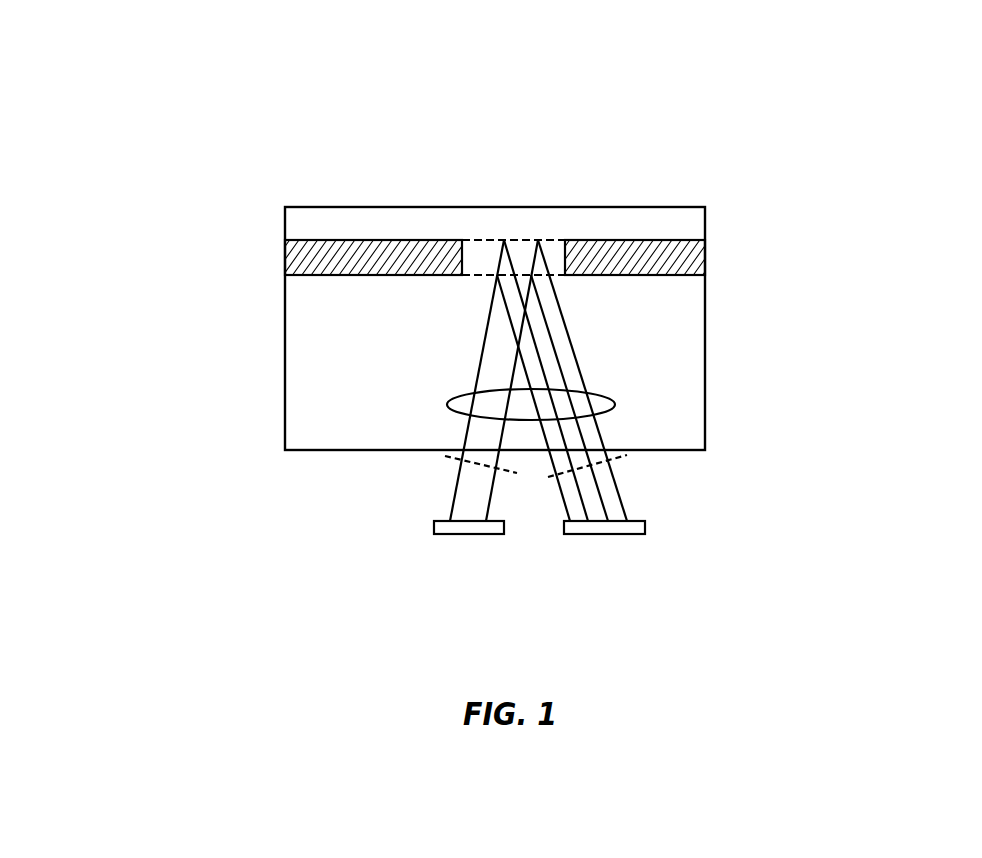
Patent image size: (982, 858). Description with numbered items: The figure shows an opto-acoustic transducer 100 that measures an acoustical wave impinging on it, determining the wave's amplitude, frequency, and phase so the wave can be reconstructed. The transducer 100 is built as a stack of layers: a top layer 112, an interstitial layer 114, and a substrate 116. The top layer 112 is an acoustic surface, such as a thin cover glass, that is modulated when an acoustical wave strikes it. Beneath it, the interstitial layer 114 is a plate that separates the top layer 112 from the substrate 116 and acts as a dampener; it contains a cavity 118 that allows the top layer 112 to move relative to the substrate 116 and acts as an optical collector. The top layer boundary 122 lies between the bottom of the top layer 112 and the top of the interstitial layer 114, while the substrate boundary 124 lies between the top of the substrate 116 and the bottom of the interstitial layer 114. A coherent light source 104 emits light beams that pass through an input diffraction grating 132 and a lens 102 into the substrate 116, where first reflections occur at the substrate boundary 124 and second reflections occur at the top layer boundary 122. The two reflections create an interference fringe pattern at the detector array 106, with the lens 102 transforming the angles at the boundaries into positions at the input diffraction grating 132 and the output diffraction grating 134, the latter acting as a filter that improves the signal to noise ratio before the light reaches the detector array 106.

The opto-acoustic transducer 100 is at (249, 65).
The lens 102 is at (447, 404).
The coherent light source 104 is at (470, 535).
The detector array 106 is at (603, 535).
The top layer 112 is at (302, 223).
The interstitial layer 114 is at (688, 261).
The substrate 116 is at (688, 367).
The cavity 118 is at (525, 250).
The top layer boundary 122 is at (487, 240).
The substrate boundary 124 is at (476, 277).
The input diffraction grating 132 is at (455, 459).
The output diffraction grating 134 is at (617, 457).